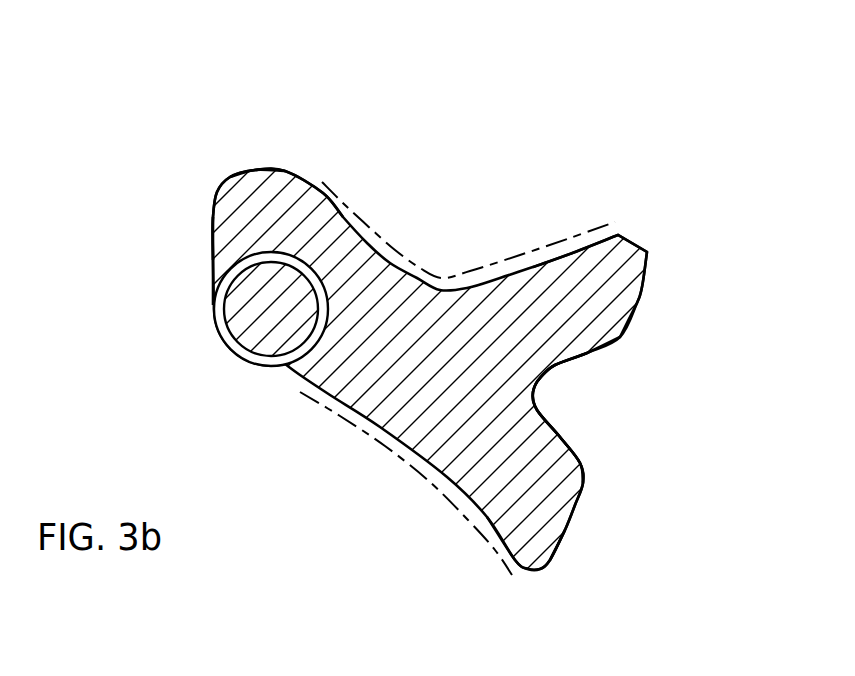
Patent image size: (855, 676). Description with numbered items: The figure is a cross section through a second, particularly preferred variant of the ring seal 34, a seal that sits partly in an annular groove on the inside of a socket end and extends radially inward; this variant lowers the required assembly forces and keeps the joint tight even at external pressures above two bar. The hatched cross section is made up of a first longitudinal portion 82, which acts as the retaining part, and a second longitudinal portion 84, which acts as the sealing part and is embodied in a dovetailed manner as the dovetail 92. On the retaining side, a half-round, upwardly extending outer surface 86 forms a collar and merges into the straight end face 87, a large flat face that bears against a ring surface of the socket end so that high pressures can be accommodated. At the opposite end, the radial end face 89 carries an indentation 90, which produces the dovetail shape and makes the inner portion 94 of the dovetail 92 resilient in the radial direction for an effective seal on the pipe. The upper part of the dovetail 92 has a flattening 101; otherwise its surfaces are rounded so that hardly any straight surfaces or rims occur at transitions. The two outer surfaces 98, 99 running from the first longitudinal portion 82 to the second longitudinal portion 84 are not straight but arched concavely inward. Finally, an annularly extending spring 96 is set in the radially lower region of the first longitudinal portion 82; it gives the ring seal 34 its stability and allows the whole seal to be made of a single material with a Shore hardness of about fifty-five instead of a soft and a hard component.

The ring seal 34 is at (433, 128).
The first longitudinal portion 82 is at (232, 178).
The second longitudinal portion 84 is at (530, 570).
The half-round outer surface 86 is at (270, 167).
The straight end face 87 is at (213, 263).
The radial end face 89 is at (645, 287).
The indentation 90 is at (563, 405).
The dovetail 92 is at (675, 353).
The inner portion of the dovetail 94 is at (573, 500).
The spring 96 is at (250, 358).
The outer surface 98 is at (552, 253).
The outer surface 99 is at (440, 445).
The flattening 101 is at (633, 240).